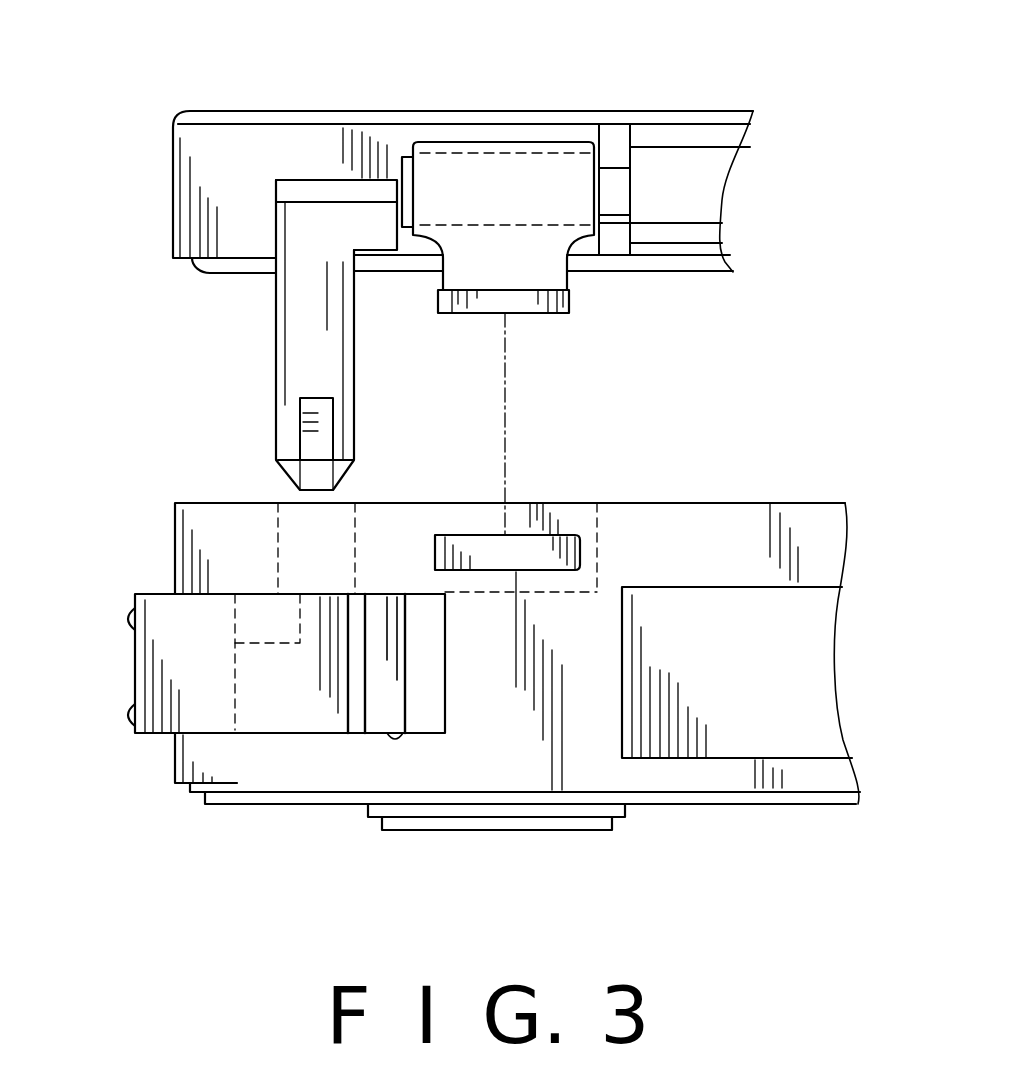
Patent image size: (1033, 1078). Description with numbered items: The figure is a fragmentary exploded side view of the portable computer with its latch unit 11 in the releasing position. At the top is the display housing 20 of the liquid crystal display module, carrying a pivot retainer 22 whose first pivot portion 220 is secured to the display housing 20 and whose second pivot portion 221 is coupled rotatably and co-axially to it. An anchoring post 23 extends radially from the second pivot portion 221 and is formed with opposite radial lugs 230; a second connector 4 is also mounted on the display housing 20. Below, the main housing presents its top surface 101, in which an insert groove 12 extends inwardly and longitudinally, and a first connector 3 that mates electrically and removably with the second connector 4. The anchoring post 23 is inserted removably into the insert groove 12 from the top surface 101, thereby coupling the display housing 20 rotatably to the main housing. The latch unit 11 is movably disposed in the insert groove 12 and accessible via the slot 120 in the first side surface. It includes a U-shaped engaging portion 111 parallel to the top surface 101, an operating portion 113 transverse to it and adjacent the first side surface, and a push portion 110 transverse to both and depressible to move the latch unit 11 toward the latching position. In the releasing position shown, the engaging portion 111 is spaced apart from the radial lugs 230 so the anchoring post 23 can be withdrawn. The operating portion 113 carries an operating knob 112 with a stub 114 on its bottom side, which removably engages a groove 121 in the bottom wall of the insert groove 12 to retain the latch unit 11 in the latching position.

The display housing 20 is at (173, 177).
The second pivot portion 221 is at (340, 192).
The first pivot portion 220 is at (608, 165).
The pivot retainer 22 is at (616, 230).
The second connector 4 is at (528, 303).
The anchoring post 23 is at (313, 352).
The radial lugs 230 is at (318, 431).
The insert groove 12 is at (395, 522).
The first connector 3 is at (527, 537).
The top surface 101 is at (735, 500).
The engaging portion 111 is at (248, 620).
The push portion 110 is at (130, 612).
The operating portion 113 is at (265, 707).
The latch unit 11 is at (275, 743).
The operating knob 112 is at (358, 678).
The stub 114 is at (355, 735).
The groove 121 is at (392, 736).
The slot 120 is at (597, 756).